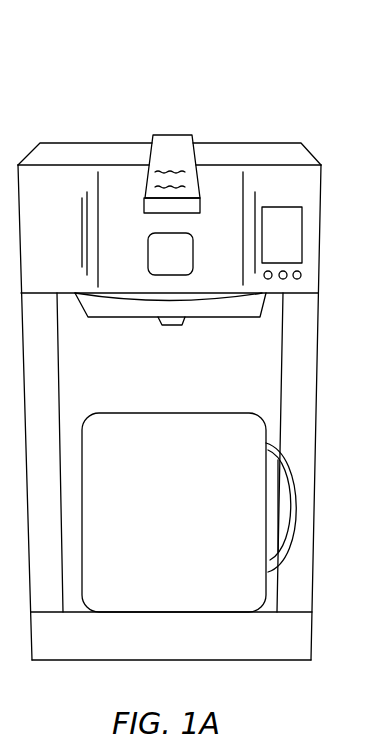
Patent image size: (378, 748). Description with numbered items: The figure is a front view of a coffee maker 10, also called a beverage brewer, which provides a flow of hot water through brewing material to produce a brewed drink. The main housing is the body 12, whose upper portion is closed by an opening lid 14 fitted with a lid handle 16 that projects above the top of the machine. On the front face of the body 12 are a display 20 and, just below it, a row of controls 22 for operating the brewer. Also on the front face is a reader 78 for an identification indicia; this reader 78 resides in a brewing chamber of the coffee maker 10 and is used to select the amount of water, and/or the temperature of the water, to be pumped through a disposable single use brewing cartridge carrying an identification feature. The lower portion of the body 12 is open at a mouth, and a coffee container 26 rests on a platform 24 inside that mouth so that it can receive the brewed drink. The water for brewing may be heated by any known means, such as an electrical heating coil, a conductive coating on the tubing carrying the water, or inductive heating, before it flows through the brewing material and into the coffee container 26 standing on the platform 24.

The coffee maker 10 is at (90, 66).
The body 12 is at (63, 211).
The opening lid 14 is at (97, 152).
The lid handle 16 is at (186, 160).
The display 20 is at (288, 233).
The controls 22 is at (285, 277).
The platform 24 is at (301, 608).
The coffee container 26 is at (183, 480).
The reader 78 is at (182, 265).